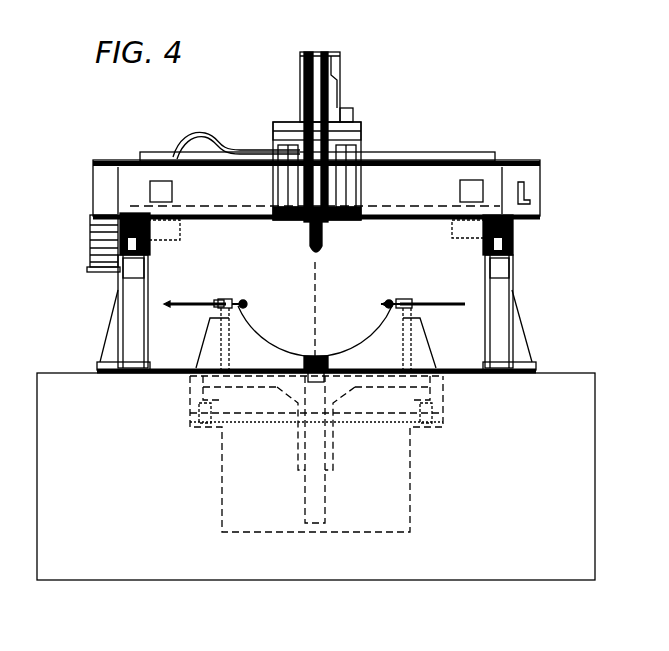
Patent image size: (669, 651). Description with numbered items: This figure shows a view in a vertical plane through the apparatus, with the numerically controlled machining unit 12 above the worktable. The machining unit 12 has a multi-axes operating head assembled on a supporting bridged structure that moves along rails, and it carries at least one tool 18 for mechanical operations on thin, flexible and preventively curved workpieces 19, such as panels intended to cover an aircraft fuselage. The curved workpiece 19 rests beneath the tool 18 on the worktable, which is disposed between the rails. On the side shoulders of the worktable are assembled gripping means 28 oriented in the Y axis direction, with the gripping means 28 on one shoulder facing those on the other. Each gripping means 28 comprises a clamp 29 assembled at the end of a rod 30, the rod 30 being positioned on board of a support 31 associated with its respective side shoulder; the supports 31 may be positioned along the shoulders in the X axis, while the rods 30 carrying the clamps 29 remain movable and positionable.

The numerically controlled machining unit 12 is at (412, 126).
The tool 18 is at (324, 233).
The workpiece 19 is at (345, 333).
The gripping means 28 is at (431, 302).
The clamp 29 is at (245, 298).
The rod 30 is at (191, 300).
The support 31 is at (222, 298).